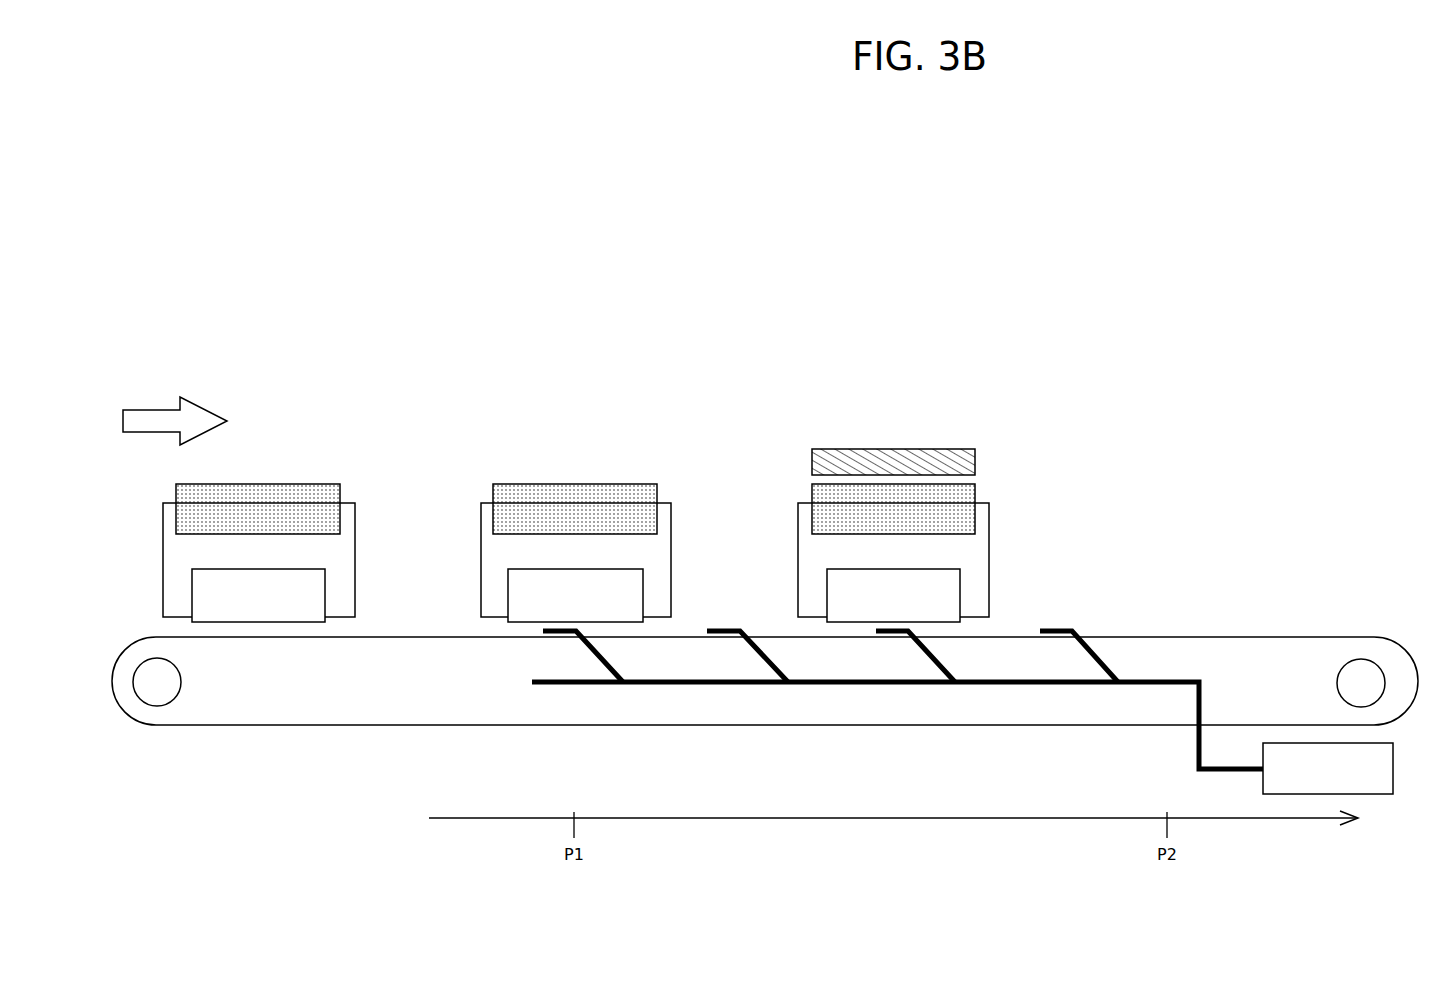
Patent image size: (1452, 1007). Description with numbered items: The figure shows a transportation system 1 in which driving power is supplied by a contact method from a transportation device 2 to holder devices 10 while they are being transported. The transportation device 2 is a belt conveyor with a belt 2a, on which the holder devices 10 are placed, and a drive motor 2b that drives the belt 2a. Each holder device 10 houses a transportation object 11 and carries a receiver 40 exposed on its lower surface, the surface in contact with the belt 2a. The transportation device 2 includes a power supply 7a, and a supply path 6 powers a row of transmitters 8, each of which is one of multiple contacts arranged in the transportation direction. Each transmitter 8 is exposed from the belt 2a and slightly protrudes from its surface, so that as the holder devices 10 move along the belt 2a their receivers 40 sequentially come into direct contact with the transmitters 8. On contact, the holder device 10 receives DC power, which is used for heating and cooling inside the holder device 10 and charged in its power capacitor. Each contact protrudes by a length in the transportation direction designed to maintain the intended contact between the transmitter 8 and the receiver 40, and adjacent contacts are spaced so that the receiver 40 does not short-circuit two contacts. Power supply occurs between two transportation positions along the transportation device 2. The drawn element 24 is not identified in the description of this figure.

The transportation system 1 is at (837, 383).
The transportation device 2 is at (765, 730).
The belt 2a is at (153, 746).
The drive motor 2b is at (1378, 641).
The supply path 6 is at (872, 719).
The power supply 7a is at (1357, 768).
The transmitter 8 is at (830, 656).
The holder device 10 is at (534, 560).
The transportation object 11 is at (617, 483).
The transmitter coil 24 is at (934, 459).
The receiver 40 is at (616, 581).